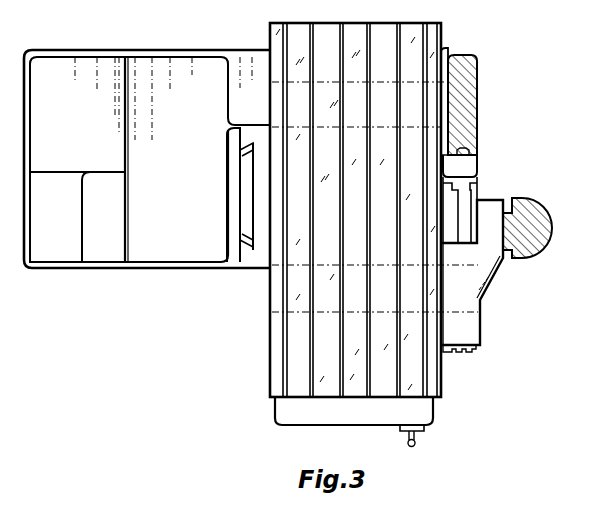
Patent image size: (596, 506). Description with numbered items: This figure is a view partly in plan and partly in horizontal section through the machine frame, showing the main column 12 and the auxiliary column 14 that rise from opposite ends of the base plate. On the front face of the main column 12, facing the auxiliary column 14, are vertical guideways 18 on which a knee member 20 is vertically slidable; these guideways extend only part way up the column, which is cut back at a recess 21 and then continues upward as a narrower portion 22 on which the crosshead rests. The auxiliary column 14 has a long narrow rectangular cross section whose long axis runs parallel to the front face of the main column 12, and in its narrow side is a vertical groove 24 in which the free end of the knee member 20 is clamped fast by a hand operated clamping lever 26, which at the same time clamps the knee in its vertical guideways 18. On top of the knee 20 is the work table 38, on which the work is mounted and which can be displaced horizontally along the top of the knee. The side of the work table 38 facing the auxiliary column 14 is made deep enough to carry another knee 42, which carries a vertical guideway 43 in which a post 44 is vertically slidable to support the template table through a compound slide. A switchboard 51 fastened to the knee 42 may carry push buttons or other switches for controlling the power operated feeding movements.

The main column 12 is at (108, 66).
The auxiliary column 14 is at (467, 71).
The vertical guideways 18 is at (244, 142).
The knee member 20 is at (258, 268).
The recess 21 is at (155, 268).
The narrower portion 22 is at (100, 268).
The vertical groove 24 is at (471, 151).
The clamping lever 26 is at (420, 441).
The work table 38 is at (275, 347).
The knee 42 is at (493, 260).
The vertical guideway 43 is at (503, 215).
The post 44 is at (531, 206).
The switchboard 51 is at (480, 348).